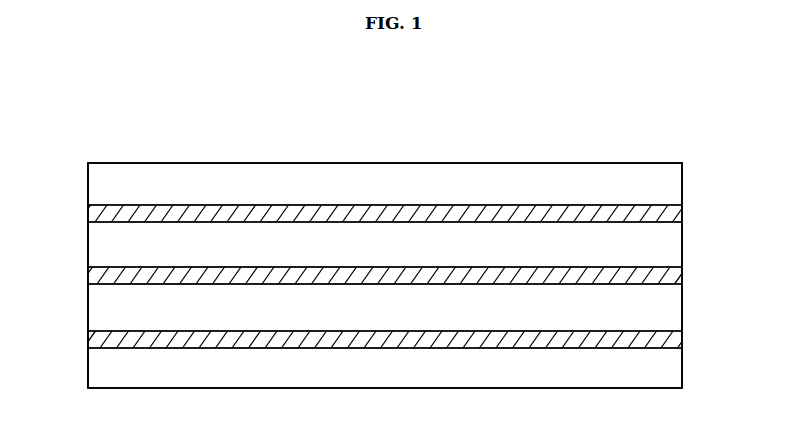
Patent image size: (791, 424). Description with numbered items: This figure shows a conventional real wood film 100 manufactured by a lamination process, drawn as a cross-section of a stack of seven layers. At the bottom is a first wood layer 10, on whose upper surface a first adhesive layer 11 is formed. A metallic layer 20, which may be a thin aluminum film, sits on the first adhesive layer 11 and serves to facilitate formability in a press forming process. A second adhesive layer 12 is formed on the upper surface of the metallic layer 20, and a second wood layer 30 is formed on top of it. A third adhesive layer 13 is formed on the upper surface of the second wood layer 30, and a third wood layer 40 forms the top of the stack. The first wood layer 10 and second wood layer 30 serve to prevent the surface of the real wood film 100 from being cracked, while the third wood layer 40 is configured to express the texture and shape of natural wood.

The real wood film 100 is at (636, 86).
The first wood layer 10 is at (663, 369).
The first adhesive layer 11 is at (93, 338).
The metallic layer 20 is at (663, 313).
The second adhesive layer 12 is at (93, 273).
The second wood layer 30 is at (663, 257).
The third adhesive layer 13 is at (93, 210).
The third wood layer 40 is at (663, 187).